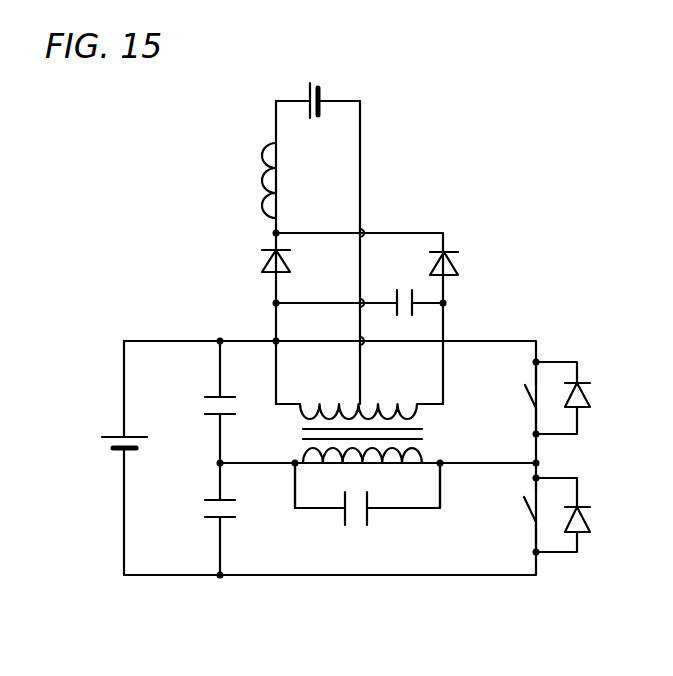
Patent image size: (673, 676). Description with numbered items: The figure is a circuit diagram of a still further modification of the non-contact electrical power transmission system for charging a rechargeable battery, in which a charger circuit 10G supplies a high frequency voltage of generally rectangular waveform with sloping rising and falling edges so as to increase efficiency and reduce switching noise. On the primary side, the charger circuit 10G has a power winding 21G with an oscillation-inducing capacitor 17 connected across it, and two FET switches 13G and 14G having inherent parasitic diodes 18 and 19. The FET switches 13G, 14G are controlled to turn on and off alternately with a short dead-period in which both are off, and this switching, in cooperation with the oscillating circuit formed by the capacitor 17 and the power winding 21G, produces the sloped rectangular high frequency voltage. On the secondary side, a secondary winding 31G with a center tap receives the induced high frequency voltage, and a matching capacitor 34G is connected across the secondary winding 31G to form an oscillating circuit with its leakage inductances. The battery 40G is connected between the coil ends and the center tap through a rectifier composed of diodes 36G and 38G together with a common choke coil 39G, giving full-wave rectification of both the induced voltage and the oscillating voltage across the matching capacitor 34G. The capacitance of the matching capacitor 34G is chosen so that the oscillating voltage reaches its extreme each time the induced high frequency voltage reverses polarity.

The charger circuit 10G is at (129, 330).
The FET switch 13G is at (542, 400).
The FET switch 14G is at (538, 507).
The oscillation-inducing capacitor 17 is at (357, 528).
The parasitic diode 18 is at (591, 402).
The parasitic diode 19 is at (594, 524).
The power winding 21G is at (381, 470).
The secondary winding 31G is at (387, 400).
The matching capacitor 34G is at (399, 318).
The diode 36G is at (258, 262).
The diode 38G is at (463, 270).
The choke coil 39G is at (260, 192).
The battery 40G is at (323, 75).